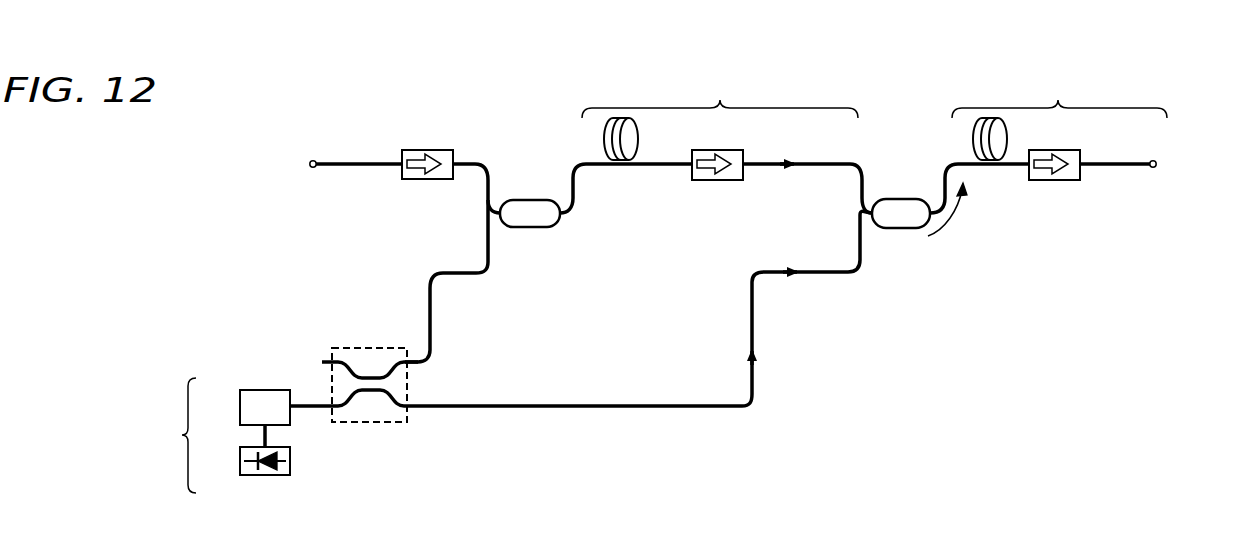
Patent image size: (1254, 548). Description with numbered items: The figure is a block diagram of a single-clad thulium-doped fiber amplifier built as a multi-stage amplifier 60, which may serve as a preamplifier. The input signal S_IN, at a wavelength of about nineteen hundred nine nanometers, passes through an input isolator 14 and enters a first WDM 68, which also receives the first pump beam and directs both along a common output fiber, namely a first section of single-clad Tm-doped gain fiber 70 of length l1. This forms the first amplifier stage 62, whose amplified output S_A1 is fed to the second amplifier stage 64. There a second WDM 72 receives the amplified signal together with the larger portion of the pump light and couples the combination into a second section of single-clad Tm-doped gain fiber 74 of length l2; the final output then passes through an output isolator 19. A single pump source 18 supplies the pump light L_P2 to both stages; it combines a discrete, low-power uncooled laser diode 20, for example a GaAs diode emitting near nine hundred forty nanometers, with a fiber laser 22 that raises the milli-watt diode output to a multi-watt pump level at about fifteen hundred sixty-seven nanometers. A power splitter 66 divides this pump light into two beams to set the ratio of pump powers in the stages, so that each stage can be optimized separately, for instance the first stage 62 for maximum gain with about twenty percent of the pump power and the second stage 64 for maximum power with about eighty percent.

The multi-stage amplifier 60 is at (122, 177).
The input isolator 14 is at (431, 148).
The first WDM 68 is at (531, 199).
The first amplifier stage 62 is at (720, 126).
The first section of single-clad Tm-doped gain fiber 70 is at (638, 137).
The second WDM 72 is at (903, 198).
The second amplifier stage 64 is at (1059, 95).
The second section of single-clad Tm-doped gain fiber 74 is at (1008, 137).
The output isolator 19 is at (1055, 182).
The power splitter 66 is at (375, 346).
The pump source 18 is at (210, 435).
The fiber laser 22 is at (239, 406).
The laser diode 20 is at (239, 460).